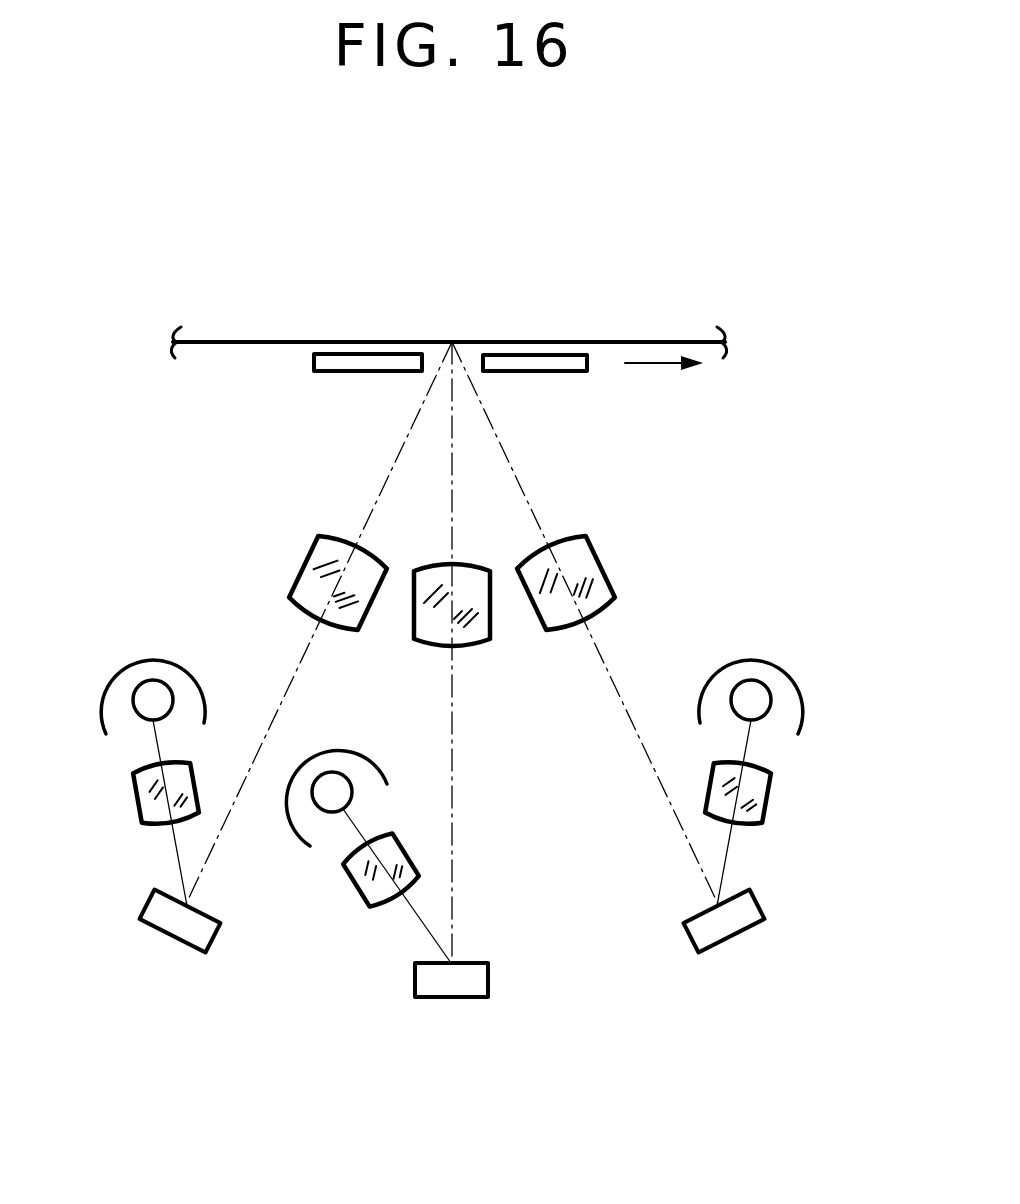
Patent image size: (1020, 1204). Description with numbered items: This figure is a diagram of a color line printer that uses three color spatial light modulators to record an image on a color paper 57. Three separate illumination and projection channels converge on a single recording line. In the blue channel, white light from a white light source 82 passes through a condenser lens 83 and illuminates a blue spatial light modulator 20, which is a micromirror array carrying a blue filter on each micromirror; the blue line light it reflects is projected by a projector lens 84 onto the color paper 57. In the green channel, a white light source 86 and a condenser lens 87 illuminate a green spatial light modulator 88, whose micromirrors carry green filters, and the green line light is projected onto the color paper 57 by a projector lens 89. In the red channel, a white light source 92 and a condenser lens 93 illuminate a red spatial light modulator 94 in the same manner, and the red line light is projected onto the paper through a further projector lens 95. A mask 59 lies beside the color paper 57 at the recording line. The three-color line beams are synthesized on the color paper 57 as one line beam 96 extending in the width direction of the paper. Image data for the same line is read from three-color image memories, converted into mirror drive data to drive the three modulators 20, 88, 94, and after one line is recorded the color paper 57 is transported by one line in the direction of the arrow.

The color paper 57 is at (270, 342).
The line beam 96 is at (452, 342).
The mask 59 is at (363, 372).
The projector lens 84 is at (318, 566).
The projector lens 89 is at (476, 650).
The condensing lens (right) 95 is at (606, 570).
The white light source 82 is at (155, 684).
The condenser lens 83 is at (138, 793).
The blue spatial light modulator 20 is at (184, 930).
The white light source 86 is at (338, 760).
The condenser lens 87 is at (373, 905).
The green spatial light modulator 88 is at (450, 998).
The white light source 92 is at (753, 684).
The condenser lens 93 is at (768, 778).
The red spatial light modulator 94 is at (728, 930).